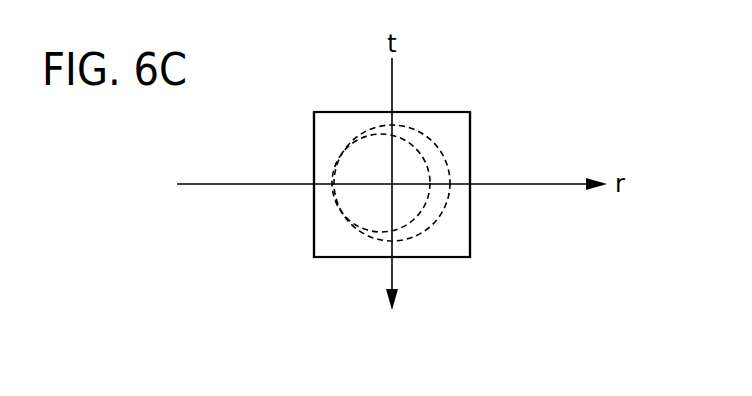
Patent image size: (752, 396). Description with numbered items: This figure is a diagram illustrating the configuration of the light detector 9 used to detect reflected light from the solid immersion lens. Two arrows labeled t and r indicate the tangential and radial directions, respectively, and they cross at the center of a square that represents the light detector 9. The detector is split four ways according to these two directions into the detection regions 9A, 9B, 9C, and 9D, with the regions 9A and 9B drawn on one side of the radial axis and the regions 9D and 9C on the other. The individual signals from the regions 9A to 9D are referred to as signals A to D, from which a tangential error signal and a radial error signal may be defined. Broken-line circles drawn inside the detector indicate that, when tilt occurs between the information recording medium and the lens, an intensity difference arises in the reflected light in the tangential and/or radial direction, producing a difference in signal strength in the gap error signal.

The light detector 9 is at (438, 258).
The region 9A is at (314, 152).
The region 9B is at (314, 231).
The region 9C is at (470, 225).
The region 9D is at (470, 133).